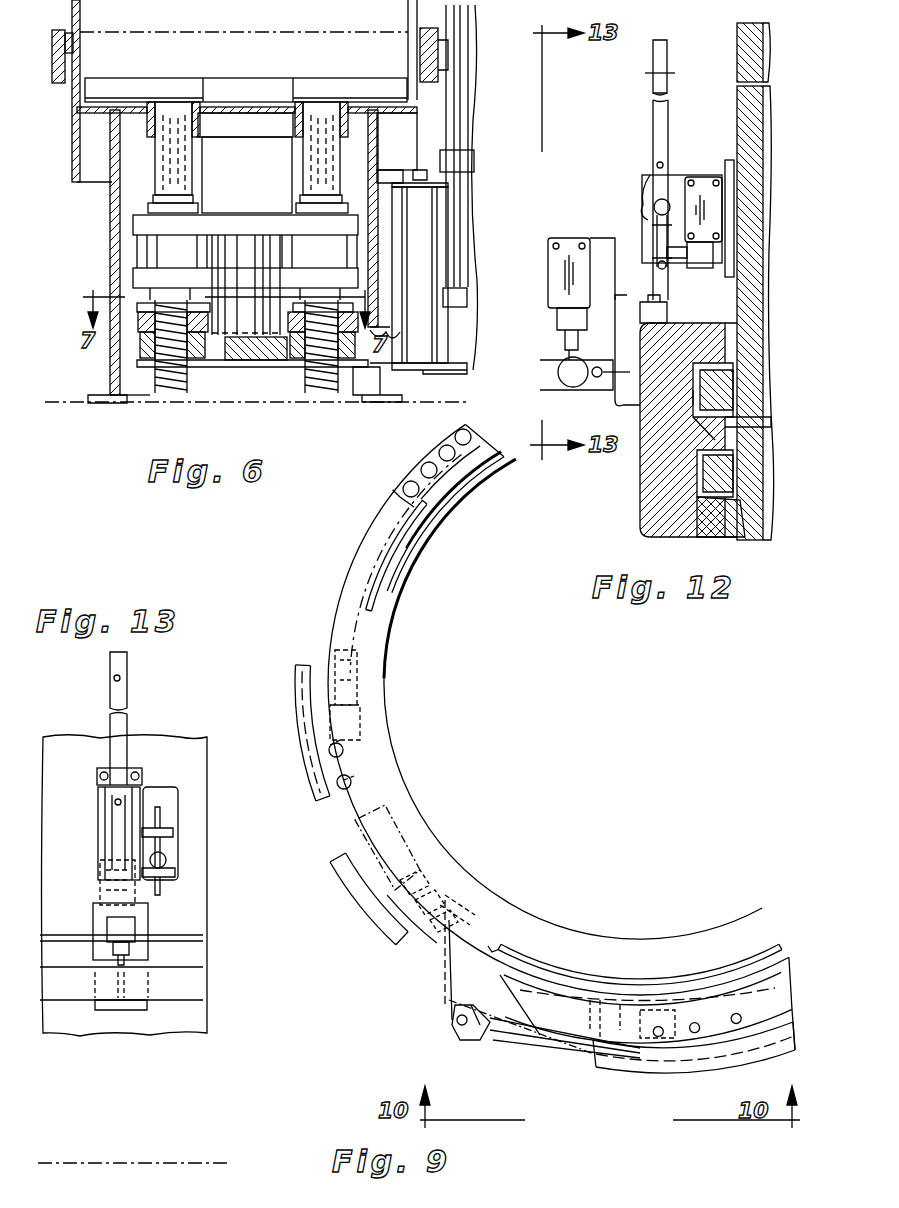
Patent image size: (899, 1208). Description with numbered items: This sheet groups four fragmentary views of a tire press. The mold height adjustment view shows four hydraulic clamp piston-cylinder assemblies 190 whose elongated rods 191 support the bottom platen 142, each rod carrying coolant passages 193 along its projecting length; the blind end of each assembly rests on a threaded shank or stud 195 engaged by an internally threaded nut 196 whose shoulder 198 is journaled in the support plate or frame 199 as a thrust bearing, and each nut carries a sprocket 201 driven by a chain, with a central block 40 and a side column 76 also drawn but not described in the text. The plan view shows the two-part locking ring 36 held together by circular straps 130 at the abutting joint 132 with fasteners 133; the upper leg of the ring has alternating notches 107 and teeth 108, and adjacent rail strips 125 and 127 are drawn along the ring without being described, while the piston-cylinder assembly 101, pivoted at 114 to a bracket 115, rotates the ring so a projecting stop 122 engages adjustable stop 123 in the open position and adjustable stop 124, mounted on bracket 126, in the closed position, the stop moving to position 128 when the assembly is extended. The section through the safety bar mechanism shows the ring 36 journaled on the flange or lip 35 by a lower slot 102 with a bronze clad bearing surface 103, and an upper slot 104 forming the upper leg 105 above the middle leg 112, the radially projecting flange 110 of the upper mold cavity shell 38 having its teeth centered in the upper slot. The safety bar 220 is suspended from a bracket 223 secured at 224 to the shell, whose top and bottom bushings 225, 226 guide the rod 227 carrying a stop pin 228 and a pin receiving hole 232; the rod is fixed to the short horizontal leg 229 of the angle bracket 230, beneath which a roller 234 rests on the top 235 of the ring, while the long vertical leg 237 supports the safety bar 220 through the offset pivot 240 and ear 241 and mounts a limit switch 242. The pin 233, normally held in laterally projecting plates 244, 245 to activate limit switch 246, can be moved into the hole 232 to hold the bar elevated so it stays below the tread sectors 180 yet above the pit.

In FIG. 12, the flange or lip 35 is at (710, 480).
In FIG. 6, the locking ring 36 is at (58, 30).
In FIG. 12, the locking ring 36 is at (636, 484).
In FIG. 13, the locking ring 36 is at (195, 1018).
In FIG. 9, the locking ring 36 is at (372, 516).
In FIG. 12, the upper mold cavity shell 38 is at (737, 36).
In FIG. 13, the upper mold cavity shell 38 is at (72, 849).
In FIG. 6, the drive block 40 is at (232, 126).
In FIG. 6, the support column 76 is at (465, 92).
In FIG. 9, the piston-cylinder assembly 101 is at (537, 1040).
In FIG. 12, the lower slot 102 is at (666, 510).
In FIG. 12, the bearing surface 103 is at (722, 432).
In FIG. 12, the upper slot 104 is at (690, 420).
In FIG. 12, the upper leg 105 is at (735, 345).
In FIG. 9, the notches 107 is at (395, 572).
In FIG. 9, the teeth 108 is at (425, 535).
In FIG. 12, the flange 110 is at (690, 396).
In FIG. 12, the middle leg 112 is at (735, 396).
In FIG. 9, the pivot connection 114 is at (452, 1022).
In FIG. 9, the bracket 115 is at (450, 998).
In FIG. 9, the projecting stop 122 is at (312, 768).
In FIG. 9, the adjustable stop 123 is at (310, 712).
In FIG. 9, the adjustable stop 124 is at (392, 900).
In FIG. 9, the guide rail 125 is at (387, 680).
In FIG. 9, the bracket 126 is at (450, 898).
In FIG. 9, the rail strip 127 is at (393, 612).
In FIG. 9, the closed position of stop 128 is at (350, 870).
In FIG. 9, the circular straps 130 is at (393, 490).
In FIG. 9, the abutting joint 132 is at (455, 428).
In FIG. 9, the fasteners 133 is at (410, 472).
In FIG. 6, the bottom platen 142 is at (157, 92).
In FIG. 13, the tread sectors 180 is at (130, 1160).
In FIG. 6, the hydraulic clamp piston-cylinder assemblies 190 is at (133, 242).
In FIG. 6, the elongated rods 191 is at (190, 176).
In FIG. 6, the coolant passages 193 is at (190, 157).
In FIG. 6, the threaded shank or stud 195 is at (172, 392).
In FIG. 6, the nut 196 is at (140, 322).
In FIG. 6, the shoulder 198 is at (138, 340).
In FIG. 6, the support plate or frame 199 is at (131, 360).
In FIG. 6, the sprocket 201 is at (133, 298).
In FIG. 6, the safety bar 220 is at (443, 330).
In FIG. 12, the safety bar 220 is at (548, 362).
In FIG. 13, the safety bar 220 is at (205, 982).
In FIG. 12, the bracket 223 is at (648, 156).
In FIG. 13, the bracket 223 is at (160, 782).
In FIG. 12, the securement 224 is at (727, 165).
In FIG. 13, the securement 224 is at (100, 768).
In FIG. 13, the top bushing 225 is at (125, 782).
In FIG. 13, the bottom bushing 226 is at (98, 862).
In FIG. 12, the rod 227 is at (655, 108).
In FIG. 13, the rod 227 is at (127, 700).
In FIG. 12, the stop pin 228 is at (645, 73).
In FIG. 13, the stop pin 228 is at (121, 678).
In FIG. 12, the short horizontal leg 229 is at (668, 306).
In FIG. 12, the angle bracket 230 is at (627, 270).
In FIG. 12, the pin receiving hole 232 is at (662, 164).
In FIG. 12, the pin 233 is at (655, 235).
In FIG. 13, the pin 233 is at (175, 845).
In FIG. 12, the roller 234 is at (688, 430).
In FIG. 13, the top of lock ring 235 is at (198, 935).
In FIG. 13, the long vertical leg 237 is at (133, 1012).
In FIG. 6, the offset pivot 240 is at (454, 278).
In FIG. 12, the offset pivot 240 is at (595, 378).
In FIG. 12, the ear 241 is at (630, 372).
In FIG. 12, the limit switch 242 is at (560, 258).
In FIG. 13, the limit switch 242 is at (138, 935).
In FIG. 13, the laterally projecting plate 244 is at (172, 832).
In FIG. 13, the laterally projecting plate 245 is at (178, 875).
In FIG. 12, the limit switch 246 is at (700, 262).